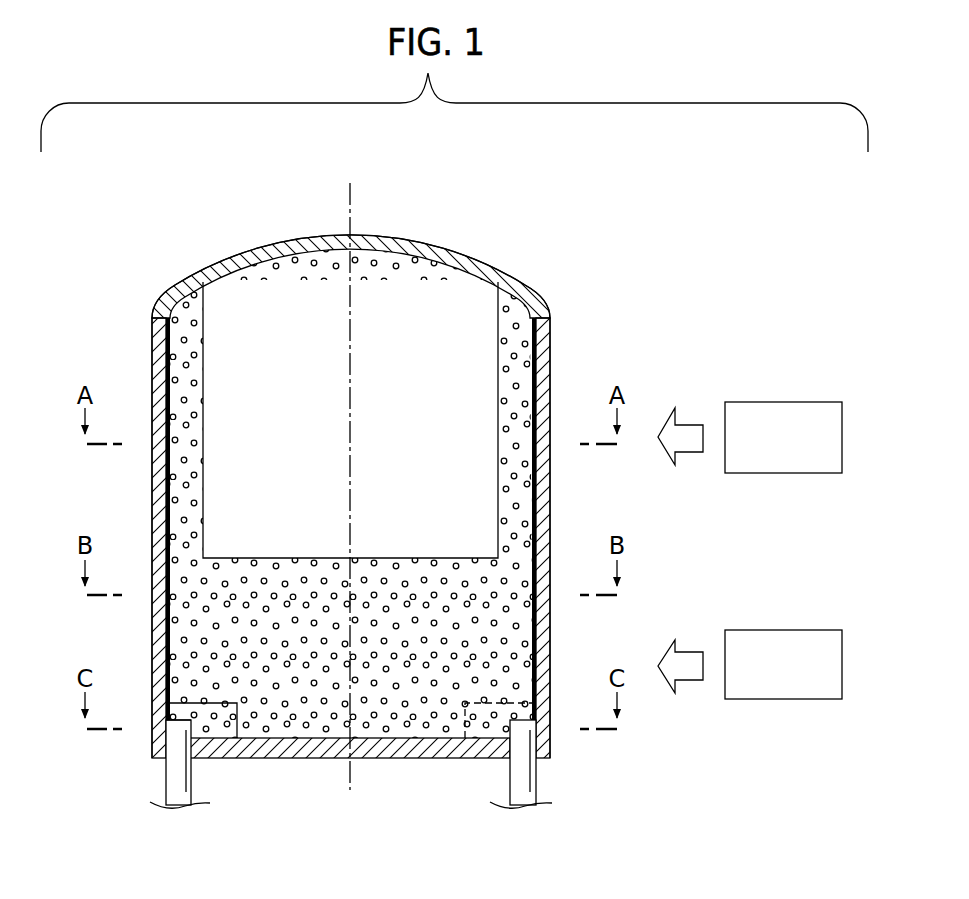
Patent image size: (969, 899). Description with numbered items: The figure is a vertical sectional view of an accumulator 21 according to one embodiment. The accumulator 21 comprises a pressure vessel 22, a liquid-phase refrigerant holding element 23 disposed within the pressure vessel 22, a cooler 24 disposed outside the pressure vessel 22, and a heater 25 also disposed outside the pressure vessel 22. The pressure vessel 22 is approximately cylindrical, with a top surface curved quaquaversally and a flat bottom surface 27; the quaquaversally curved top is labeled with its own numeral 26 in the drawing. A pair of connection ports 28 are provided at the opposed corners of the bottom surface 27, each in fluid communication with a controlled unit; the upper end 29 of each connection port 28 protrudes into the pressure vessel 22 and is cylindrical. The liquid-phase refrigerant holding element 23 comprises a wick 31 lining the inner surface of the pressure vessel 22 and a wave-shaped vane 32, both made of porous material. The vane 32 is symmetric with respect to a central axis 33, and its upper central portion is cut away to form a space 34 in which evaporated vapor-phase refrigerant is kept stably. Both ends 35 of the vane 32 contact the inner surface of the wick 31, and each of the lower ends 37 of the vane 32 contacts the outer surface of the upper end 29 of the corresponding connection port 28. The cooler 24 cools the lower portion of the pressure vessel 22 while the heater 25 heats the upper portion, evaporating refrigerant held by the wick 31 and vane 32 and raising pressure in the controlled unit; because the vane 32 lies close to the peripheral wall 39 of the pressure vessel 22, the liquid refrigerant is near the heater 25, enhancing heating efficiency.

The accumulator 21 is at (377, 483).
The pressure vessel 22 is at (492, 254).
The liquid-phase refrigerant holding element 23 is at (405, 525).
The cooler 24 is at (821, 641).
The heater 25 is at (821, 411).
The top cover 26 is at (273, 252).
The bottom surface 27 is at (418, 750).
The connection port 28 is at (200, 776).
The upper end of the connection port 29 is at (178, 728).
The wick 31 is at (524, 346).
The vane 32 is at (388, 520).
The central axis 33 is at (363, 203).
The space 34 is at (301, 388).
The ends of the vane 35 is at (178, 372).
The lower ends of the vane 37 is at (200, 693).
The peripheral wall 39 is at (552, 498).